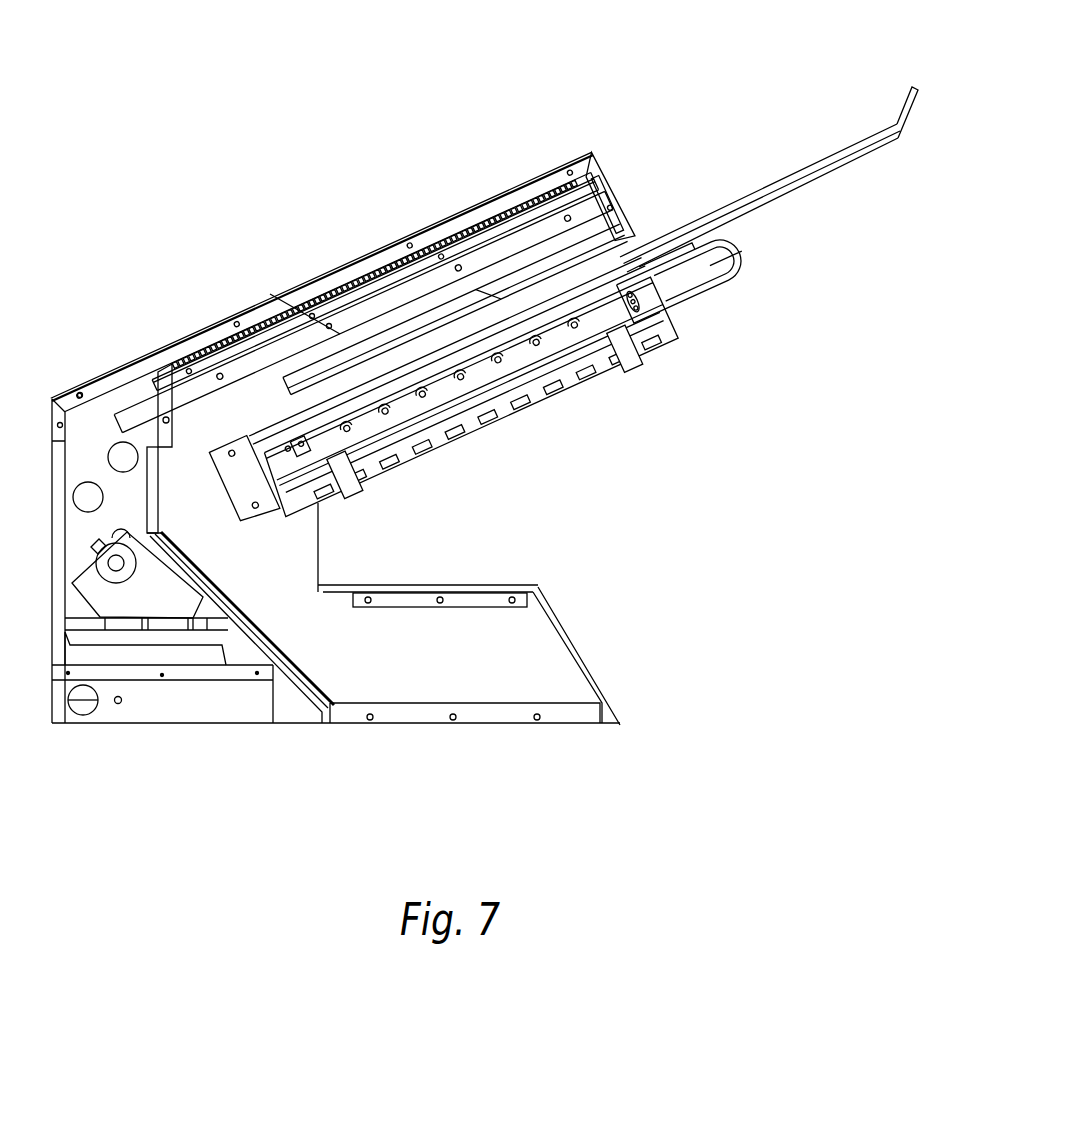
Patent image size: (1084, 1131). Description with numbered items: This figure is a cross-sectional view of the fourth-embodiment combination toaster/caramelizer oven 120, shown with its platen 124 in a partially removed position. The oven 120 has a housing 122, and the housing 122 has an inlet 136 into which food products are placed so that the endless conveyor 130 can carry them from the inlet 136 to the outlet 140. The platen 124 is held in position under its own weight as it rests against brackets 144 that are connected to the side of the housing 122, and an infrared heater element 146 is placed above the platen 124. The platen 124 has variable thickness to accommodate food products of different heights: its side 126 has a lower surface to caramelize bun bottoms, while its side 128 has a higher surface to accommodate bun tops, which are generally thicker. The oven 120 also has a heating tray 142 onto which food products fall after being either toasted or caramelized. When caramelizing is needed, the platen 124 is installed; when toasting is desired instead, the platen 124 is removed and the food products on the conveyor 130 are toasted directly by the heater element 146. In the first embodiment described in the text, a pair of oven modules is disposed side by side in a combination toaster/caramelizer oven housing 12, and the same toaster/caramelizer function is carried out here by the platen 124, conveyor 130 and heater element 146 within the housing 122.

The combination toaster/caramelizer oven housing 12 is at (700, 293).
The combination toaster/caramelizer oven 120 is at (316, 148).
The housing 122 is at (533, 173).
The platen 124 is at (897, 123).
The side 126 is at (763, 178).
The side 128 is at (837, 170).
The endless conveyor 130 is at (728, 255).
The inlet 136 is at (735, 223).
The outlet 140 is at (205, 393).
The heating tray 142 is at (505, 703).
The brackets 144 is at (292, 418).
The infrared heater element 146 is at (393, 253).